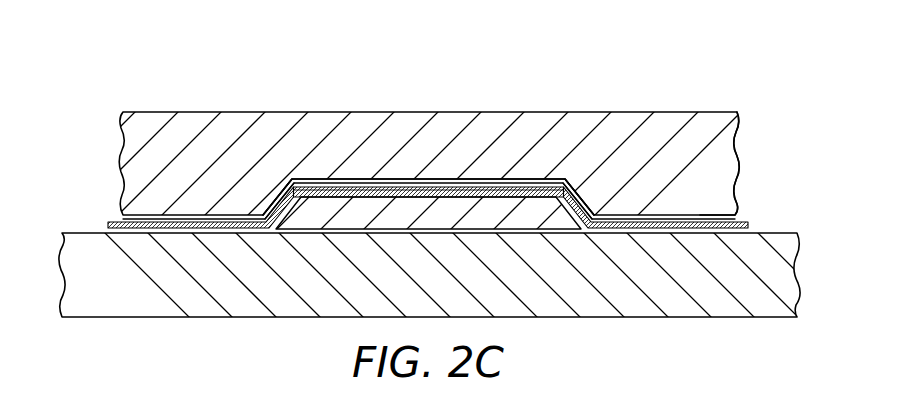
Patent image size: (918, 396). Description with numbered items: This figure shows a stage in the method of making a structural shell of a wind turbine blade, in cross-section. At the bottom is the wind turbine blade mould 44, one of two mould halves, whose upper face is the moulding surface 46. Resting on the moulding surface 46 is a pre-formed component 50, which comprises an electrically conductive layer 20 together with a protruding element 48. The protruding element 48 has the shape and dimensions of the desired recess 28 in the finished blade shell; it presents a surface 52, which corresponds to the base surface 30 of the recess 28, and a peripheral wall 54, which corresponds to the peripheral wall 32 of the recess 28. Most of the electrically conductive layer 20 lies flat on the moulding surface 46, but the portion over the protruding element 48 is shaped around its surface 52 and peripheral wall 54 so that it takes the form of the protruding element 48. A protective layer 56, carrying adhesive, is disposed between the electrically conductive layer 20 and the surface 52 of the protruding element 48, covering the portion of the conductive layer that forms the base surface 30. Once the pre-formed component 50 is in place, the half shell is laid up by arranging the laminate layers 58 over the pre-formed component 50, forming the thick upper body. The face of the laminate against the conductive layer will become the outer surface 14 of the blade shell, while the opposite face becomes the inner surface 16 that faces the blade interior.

The outer surface 14 is at (714, 213).
The inner surface 16 is at (388, 149).
The electrically conductive layer 20 is at (665, 222).
The recess 28 is at (418, 155).
The base surface 30 is at (429, 144).
The peripheral wall 32 is at (273, 205).
The wind turbine blade mould 44 is at (757, 307).
The moulding surface 46 is at (123, 214).
The protruding element 48 is at (457, 208).
The pre-formed component 50 is at (545, 160).
The surface 52 is at (510, 197).
The peripheral wall 54 is at (576, 190).
The protective layer 56 is at (429, 133).
The laminate layers 58 is at (708, 122).